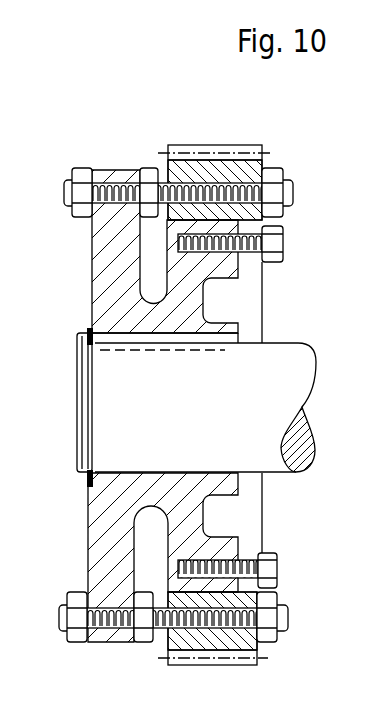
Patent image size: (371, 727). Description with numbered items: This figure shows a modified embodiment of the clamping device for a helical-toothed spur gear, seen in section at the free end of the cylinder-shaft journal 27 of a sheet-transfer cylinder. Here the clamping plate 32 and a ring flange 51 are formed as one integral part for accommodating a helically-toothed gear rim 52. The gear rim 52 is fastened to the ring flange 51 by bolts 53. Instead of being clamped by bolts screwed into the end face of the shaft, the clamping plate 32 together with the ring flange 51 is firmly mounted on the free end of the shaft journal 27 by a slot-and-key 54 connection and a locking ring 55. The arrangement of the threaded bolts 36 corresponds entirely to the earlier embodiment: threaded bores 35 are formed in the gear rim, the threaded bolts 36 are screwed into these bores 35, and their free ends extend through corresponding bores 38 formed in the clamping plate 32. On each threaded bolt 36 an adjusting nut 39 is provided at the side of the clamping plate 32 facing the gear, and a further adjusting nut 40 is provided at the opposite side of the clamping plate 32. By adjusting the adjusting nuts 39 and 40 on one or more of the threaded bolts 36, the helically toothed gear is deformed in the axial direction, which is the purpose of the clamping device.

The shaft journal 27 is at (286, 360).
The clamping plate 32 is at (104, 172).
The threaded bores 35 is at (248, 160).
The threaded bolts 36 is at (208, 158).
The bores 38 is at (120, 172).
The adjusting nut 39 is at (152, 170).
The adjusting nut 40 is at (76, 213).
The ring flange 51 is at (193, 523).
The helically-toothed gear rim 52 is at (260, 605).
The bolts 53 is at (272, 560).
The slot-and-key connection 54 is at (130, 349).
The locking ring 55 is at (82, 478).